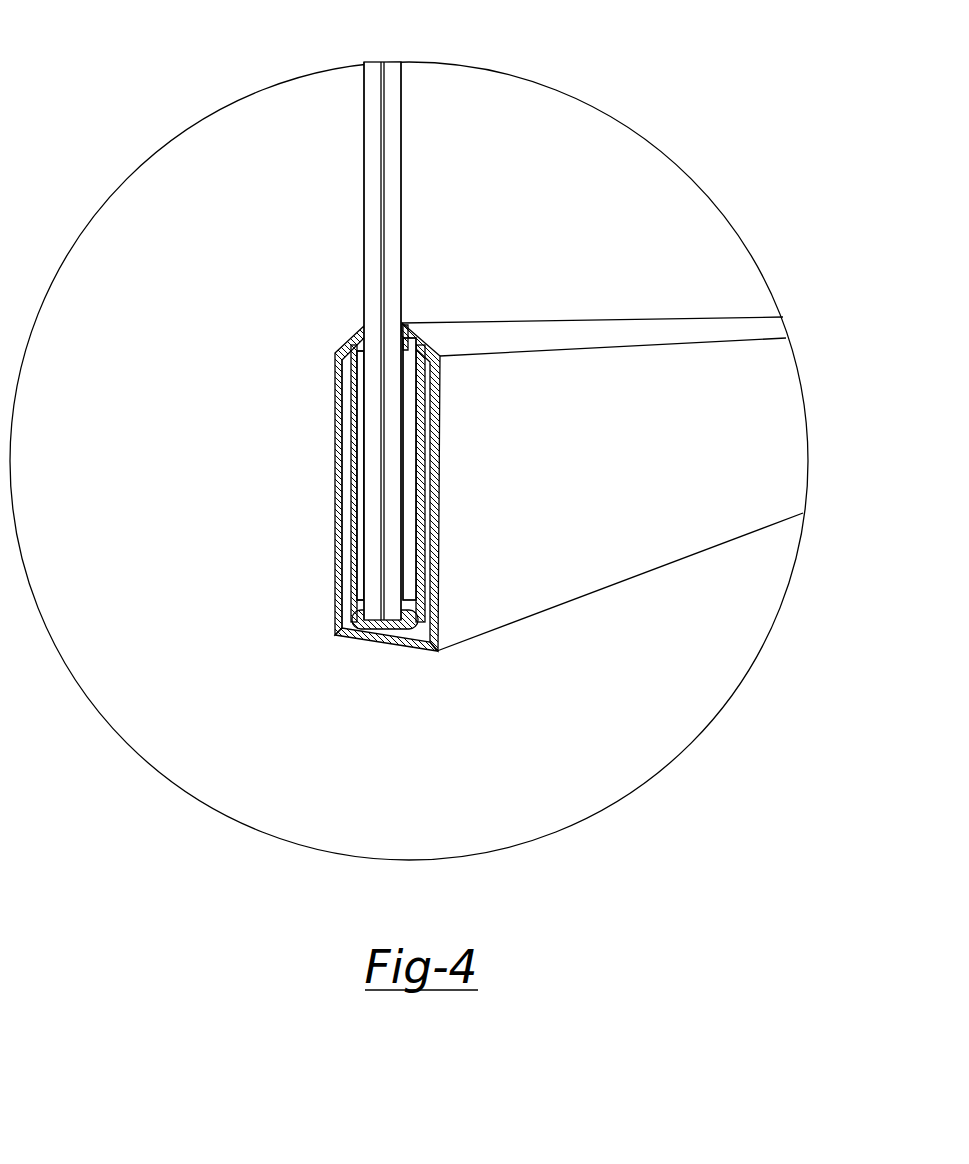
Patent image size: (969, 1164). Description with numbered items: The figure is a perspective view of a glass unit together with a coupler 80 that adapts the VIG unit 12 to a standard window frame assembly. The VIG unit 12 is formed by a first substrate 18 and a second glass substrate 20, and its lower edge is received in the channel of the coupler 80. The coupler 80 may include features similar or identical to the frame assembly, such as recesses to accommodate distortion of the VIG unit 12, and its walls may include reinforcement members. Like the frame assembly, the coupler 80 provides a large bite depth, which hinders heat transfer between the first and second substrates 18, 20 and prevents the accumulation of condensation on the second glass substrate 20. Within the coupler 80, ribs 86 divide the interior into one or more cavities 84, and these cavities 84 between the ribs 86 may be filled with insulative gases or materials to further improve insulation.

The VIG unit 12 is at (398, 337).
The first substrate 18 is at (372, 138).
The second glass substrate 20 is at (405, 123).
The coupler 80 is at (522, 622).
The cavities 84 is at (358, 502).
The ribs 86 is at (357, 422).